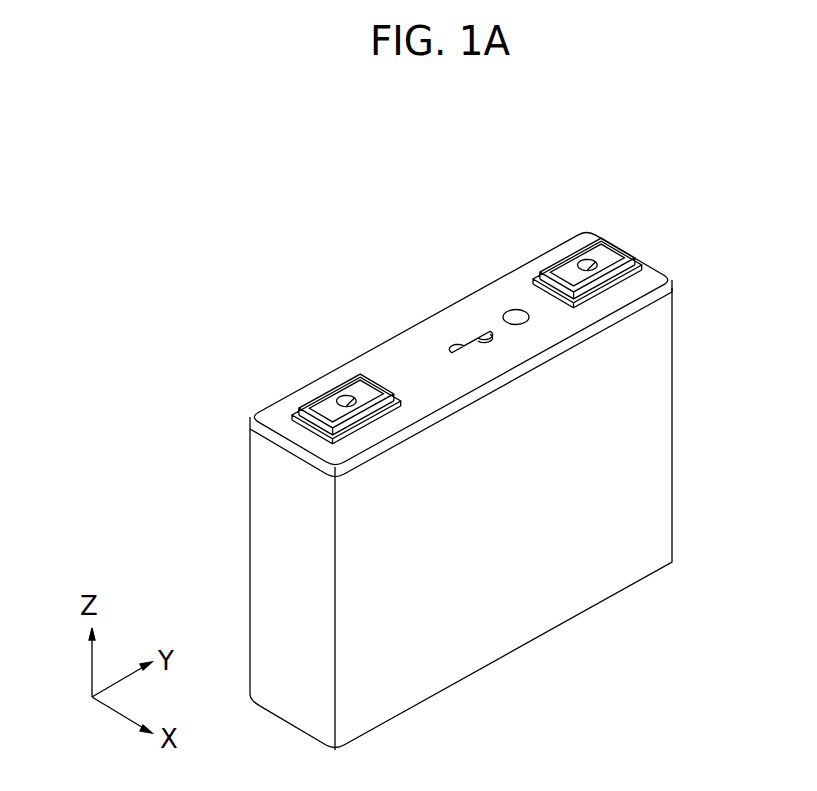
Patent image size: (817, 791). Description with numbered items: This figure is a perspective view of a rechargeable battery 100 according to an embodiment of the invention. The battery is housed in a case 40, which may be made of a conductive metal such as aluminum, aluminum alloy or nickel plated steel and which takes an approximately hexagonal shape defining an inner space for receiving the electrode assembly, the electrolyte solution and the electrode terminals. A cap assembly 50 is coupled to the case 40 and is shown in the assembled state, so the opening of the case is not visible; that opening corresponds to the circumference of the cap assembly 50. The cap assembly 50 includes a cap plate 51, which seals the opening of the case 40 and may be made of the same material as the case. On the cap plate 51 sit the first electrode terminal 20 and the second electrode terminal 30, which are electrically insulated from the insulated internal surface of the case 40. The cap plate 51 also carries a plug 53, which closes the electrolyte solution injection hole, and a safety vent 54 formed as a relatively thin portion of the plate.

The rechargeable battery 100 is at (680, 241).
The first electrode terminal 20 is at (310, 399).
The second electrode terminal 30 is at (575, 245).
The case 40 is at (647, 429).
The cap assembly 50 is at (338, 359).
The cap plate 51 is at (410, 350).
The plug 53 is at (512, 314).
The safety vent 54 is at (467, 343).